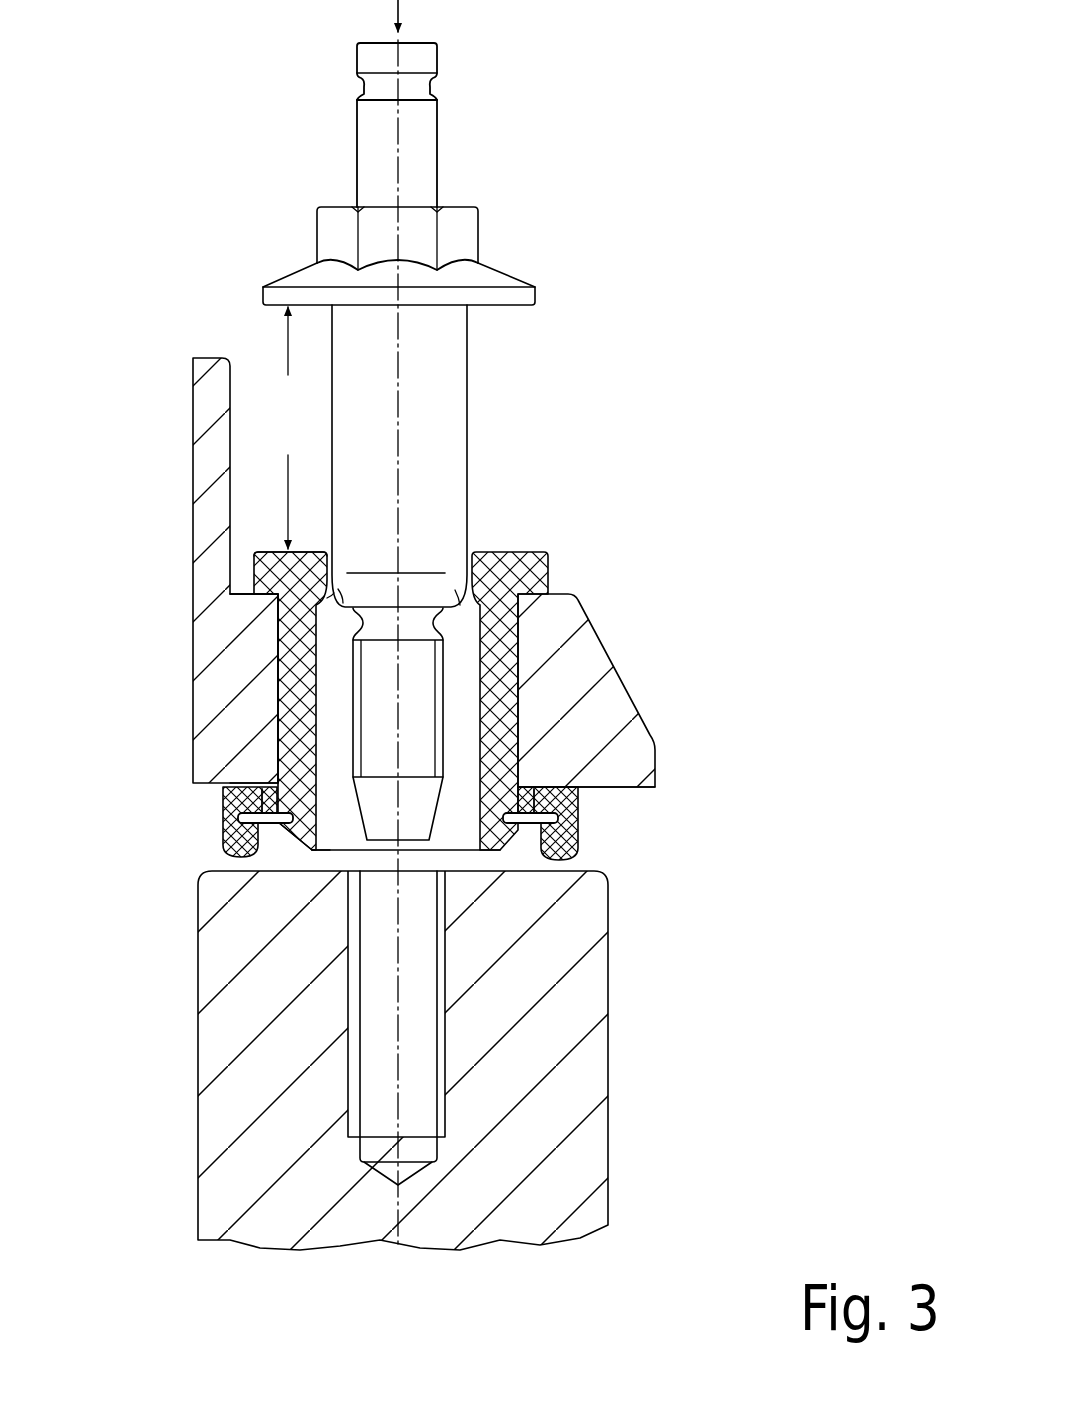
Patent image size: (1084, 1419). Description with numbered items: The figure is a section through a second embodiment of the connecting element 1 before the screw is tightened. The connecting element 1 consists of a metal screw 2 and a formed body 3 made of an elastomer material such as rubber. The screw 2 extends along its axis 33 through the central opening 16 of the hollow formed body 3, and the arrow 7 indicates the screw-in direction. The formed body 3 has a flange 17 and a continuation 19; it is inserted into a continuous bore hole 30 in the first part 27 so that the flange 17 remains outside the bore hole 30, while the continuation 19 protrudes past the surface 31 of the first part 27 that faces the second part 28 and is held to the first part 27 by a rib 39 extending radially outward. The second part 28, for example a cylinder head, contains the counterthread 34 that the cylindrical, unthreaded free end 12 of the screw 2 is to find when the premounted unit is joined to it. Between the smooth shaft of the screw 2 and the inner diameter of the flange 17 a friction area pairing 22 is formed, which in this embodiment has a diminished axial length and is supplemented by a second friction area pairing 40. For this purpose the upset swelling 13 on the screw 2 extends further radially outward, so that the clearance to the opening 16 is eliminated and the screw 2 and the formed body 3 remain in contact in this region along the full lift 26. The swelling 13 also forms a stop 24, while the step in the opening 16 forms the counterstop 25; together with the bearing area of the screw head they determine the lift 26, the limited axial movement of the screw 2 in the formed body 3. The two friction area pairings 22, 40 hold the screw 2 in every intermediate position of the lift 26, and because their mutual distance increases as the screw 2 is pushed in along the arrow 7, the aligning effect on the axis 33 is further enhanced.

The connecting element 1 is at (552, 160).
The screw 2 is at (432, 415).
The formed body 3 is at (518, 552).
The arrow 7 is at (400, 4).
The free end 12 is at (412, 828).
The upset swelling 13 is at (455, 593).
The opening 16 is at (313, 857).
The flange 17 is at (258, 565).
The continuation 19 is at (285, 850).
The friction area pairing 22 is at (347, 550).
The stop 24 is at (338, 589).
The counterstop 25 is at (327, 603).
The lift 26 is at (290, 428).
The first part 27 is at (215, 722).
The second part 28 is at (242, 1030).
The bore hole 30 is at (530, 685).
The surface 31 is at (625, 787).
The axis 33 is at (398, 330).
The counterthread 34 is at (445, 1042).
The rib 39 is at (225, 808).
The second friction area pairing 40 is at (283, 602).